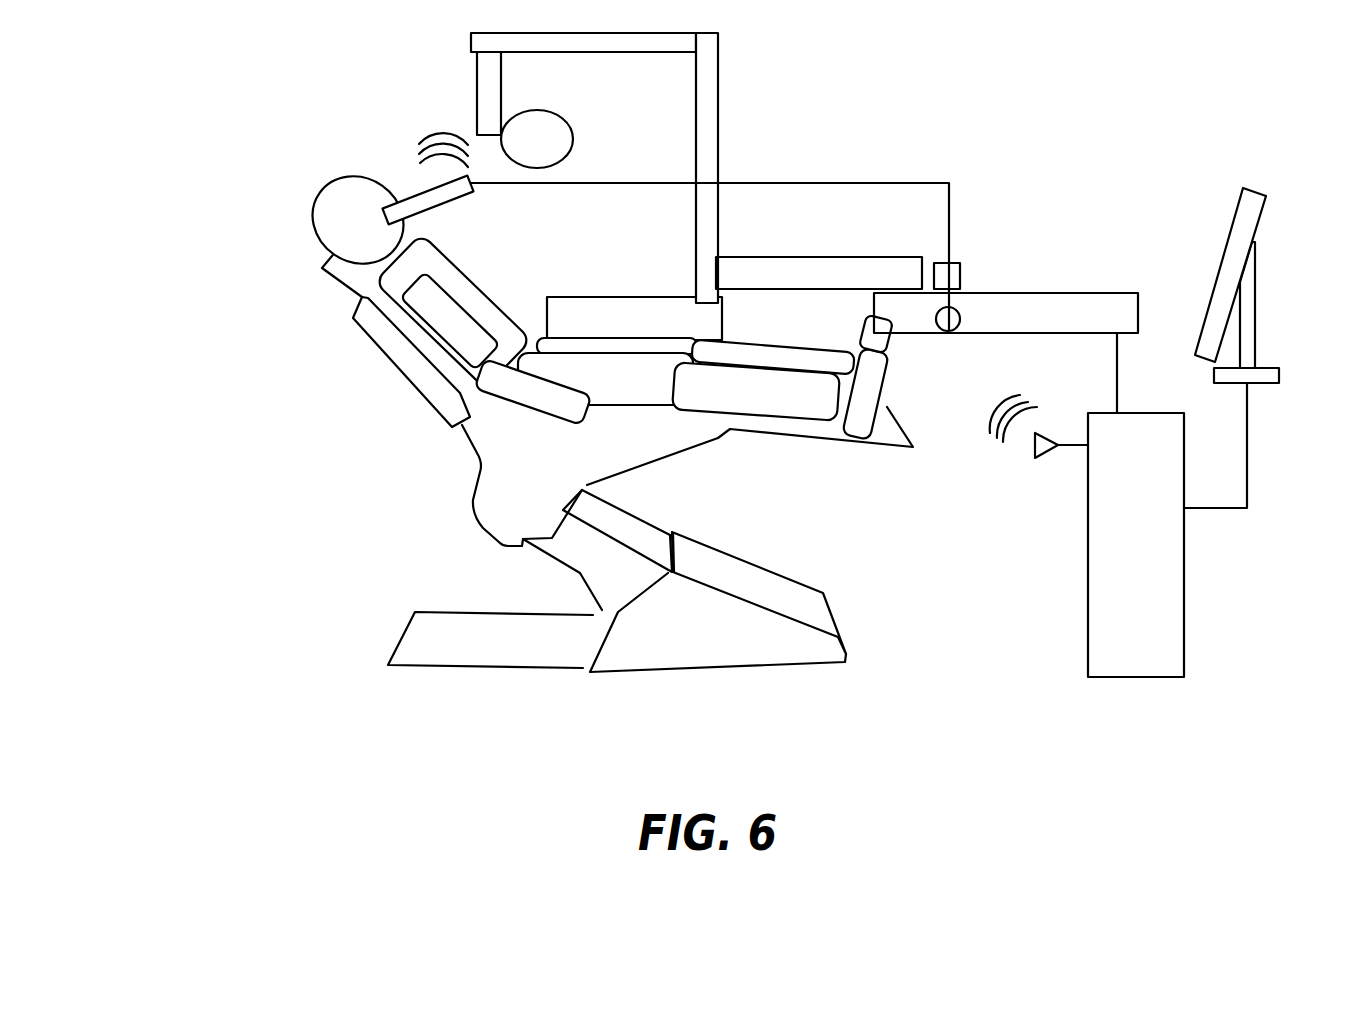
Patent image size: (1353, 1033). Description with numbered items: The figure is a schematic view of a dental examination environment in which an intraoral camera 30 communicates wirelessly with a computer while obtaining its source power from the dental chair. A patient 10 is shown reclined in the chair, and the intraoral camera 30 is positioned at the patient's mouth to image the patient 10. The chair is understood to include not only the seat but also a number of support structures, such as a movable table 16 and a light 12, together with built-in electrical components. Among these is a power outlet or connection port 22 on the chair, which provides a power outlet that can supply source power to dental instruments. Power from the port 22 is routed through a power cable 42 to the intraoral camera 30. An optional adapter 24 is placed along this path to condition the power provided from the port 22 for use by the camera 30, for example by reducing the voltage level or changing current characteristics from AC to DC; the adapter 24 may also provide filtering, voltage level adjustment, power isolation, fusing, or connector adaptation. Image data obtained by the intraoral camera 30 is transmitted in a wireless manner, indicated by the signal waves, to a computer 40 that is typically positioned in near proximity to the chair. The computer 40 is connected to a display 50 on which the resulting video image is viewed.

The patient 10 is at (388, 287).
The light 12 is at (570, 135).
The movable table 16 is at (1010, 290).
The power outlet or connection port 22 is at (952, 308).
The adapter 24 is at (940, 263).
The intraoral camera 30 is at (425, 191).
The computer 40 is at (1184, 591).
The power cable 42 is at (822, 180).
The display 50 is at (1252, 193).